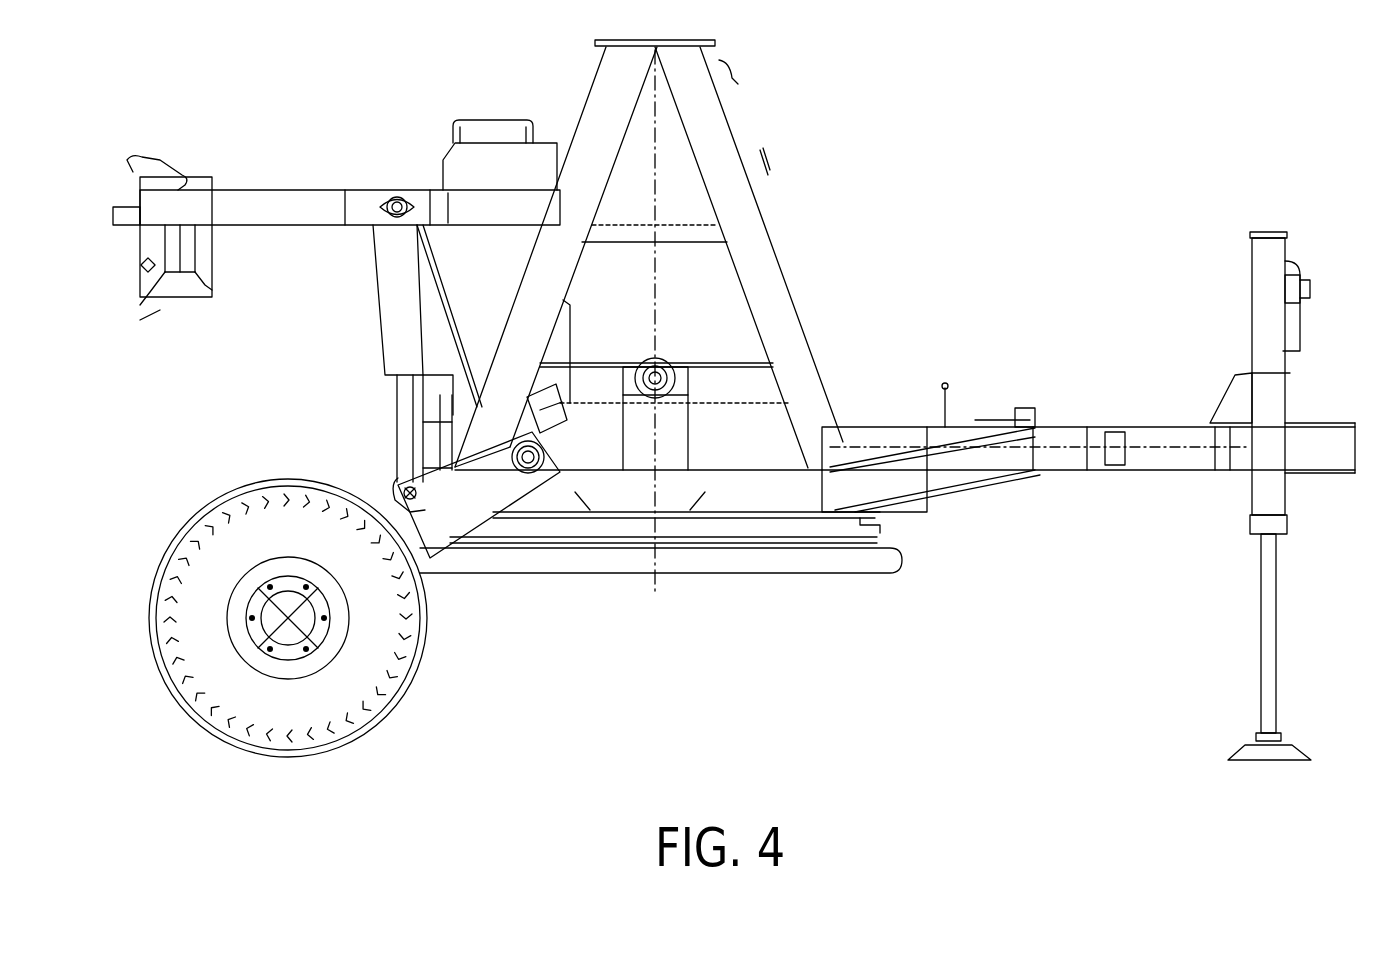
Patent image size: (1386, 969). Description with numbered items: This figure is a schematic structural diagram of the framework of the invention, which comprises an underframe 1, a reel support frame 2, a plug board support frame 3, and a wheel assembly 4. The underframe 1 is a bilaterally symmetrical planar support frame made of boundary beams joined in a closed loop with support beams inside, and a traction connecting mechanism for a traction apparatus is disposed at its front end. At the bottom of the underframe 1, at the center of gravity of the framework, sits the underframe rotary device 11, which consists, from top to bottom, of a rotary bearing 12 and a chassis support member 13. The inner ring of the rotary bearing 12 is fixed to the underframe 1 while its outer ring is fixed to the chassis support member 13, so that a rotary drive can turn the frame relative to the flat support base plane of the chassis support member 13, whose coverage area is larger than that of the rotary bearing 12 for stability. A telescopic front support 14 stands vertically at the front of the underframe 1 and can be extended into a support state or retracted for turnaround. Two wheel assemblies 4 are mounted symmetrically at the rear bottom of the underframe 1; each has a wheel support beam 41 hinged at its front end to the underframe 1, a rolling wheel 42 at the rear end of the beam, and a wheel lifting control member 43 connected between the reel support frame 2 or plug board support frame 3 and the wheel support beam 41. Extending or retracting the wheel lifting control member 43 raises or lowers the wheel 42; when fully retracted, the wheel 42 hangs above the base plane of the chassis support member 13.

The underframe 1 is at (1088, 379).
The underframe rotary device 11 is at (677, 618).
The rotary bearing 12 is at (663, 607).
The chassis support member 13 is at (686, 590).
The telescopic front support 14 is at (1214, 496).
The reel support frame 2 is at (700, 316).
The plug board support frame 3 is at (336, 185).
The wheel assembly 4 is at (278, 560).
The wheel support beam 41 is at (485, 560).
The wheel 42 is at (346, 449).
The wheel lifting control member 43 is at (361, 320).